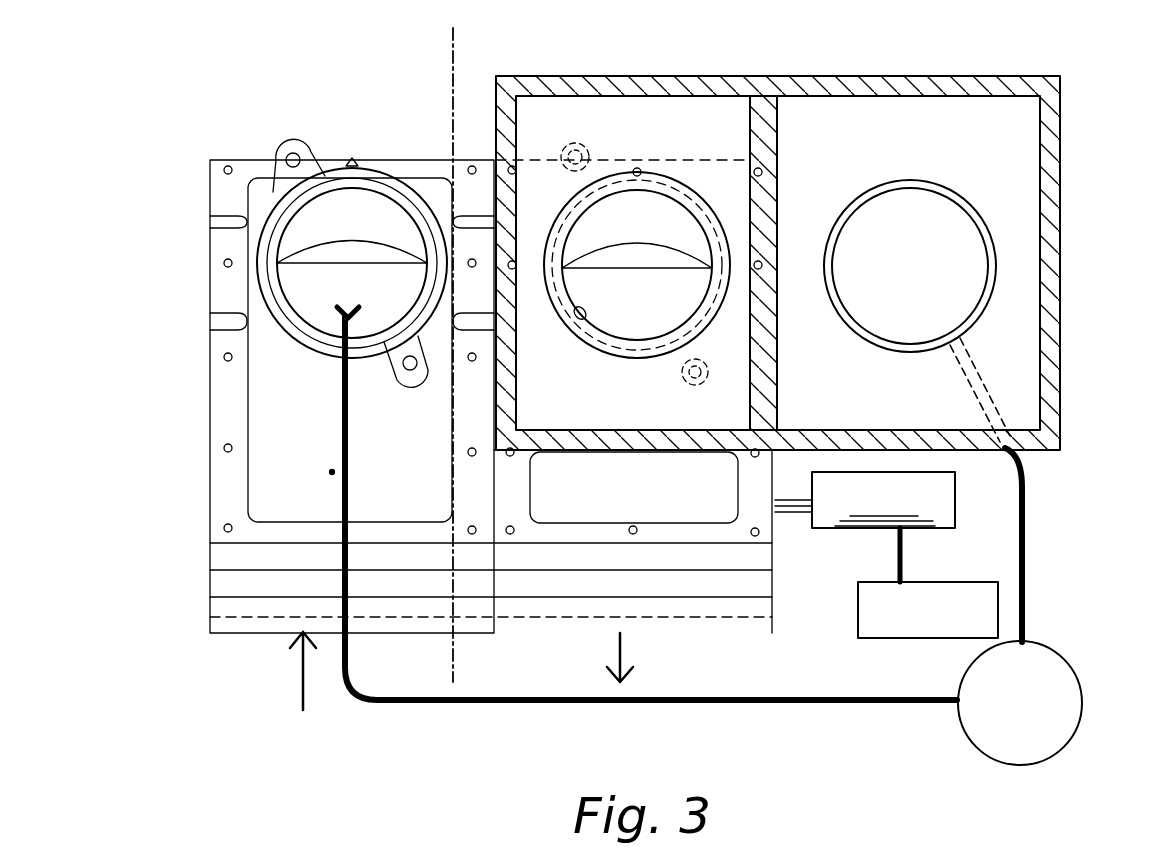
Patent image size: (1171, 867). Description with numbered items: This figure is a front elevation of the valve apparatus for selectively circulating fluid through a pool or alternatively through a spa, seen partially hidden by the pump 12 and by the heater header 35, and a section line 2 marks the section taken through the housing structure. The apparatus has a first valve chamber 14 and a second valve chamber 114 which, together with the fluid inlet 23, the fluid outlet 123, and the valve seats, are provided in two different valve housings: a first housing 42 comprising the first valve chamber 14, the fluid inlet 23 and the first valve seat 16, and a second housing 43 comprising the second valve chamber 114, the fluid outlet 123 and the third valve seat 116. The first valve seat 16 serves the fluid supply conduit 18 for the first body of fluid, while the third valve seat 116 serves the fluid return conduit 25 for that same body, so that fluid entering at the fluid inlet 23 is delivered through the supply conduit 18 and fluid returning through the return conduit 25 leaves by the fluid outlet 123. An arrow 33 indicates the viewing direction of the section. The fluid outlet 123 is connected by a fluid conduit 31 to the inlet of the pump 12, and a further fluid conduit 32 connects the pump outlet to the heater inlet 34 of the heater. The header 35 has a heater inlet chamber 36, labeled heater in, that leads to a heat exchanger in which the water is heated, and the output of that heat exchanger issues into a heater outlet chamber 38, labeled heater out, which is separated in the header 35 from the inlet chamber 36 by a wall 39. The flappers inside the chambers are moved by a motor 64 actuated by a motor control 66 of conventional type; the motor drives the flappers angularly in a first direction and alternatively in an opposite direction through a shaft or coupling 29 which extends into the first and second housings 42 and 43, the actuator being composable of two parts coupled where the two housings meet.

The section line 2- 2 is at (453, 23).
The filter pump 12 is at (1058, 675).
The first valve chamber 14 is at (618, 314).
The first valve seat 16 is at (682, 501).
The fluid supply conduit 18 is at (623, 660).
The fluid inlet 23 is at (578, 318).
The fluid return conduit 25 is at (303, 688).
The actuator shaft or coupling 29 is at (785, 518).
The fluid conduit 31 is at (353, 683).
The fluid conduit 32 is at (1027, 600).
The engine block section 33 is at (196, 381).
The heater inlet 34 is at (940, 203).
The header 35 is at (1043, 453).
The heater inlet chamber 36 is at (992, 379).
The heater outlet chamber 38 is at (728, 147).
The wall 39 is at (778, 207).
The first valve housing 42 is at (727, 623).
The second valve housing 43 is at (263, 632).
The motor 64 is at (957, 508).
The motor control 66 is at (898, 632).
The second valve chamber 114 is at (318, 303).
The third valve seat 116 is at (428, 485).
The fluid outlet 123 is at (340, 322).